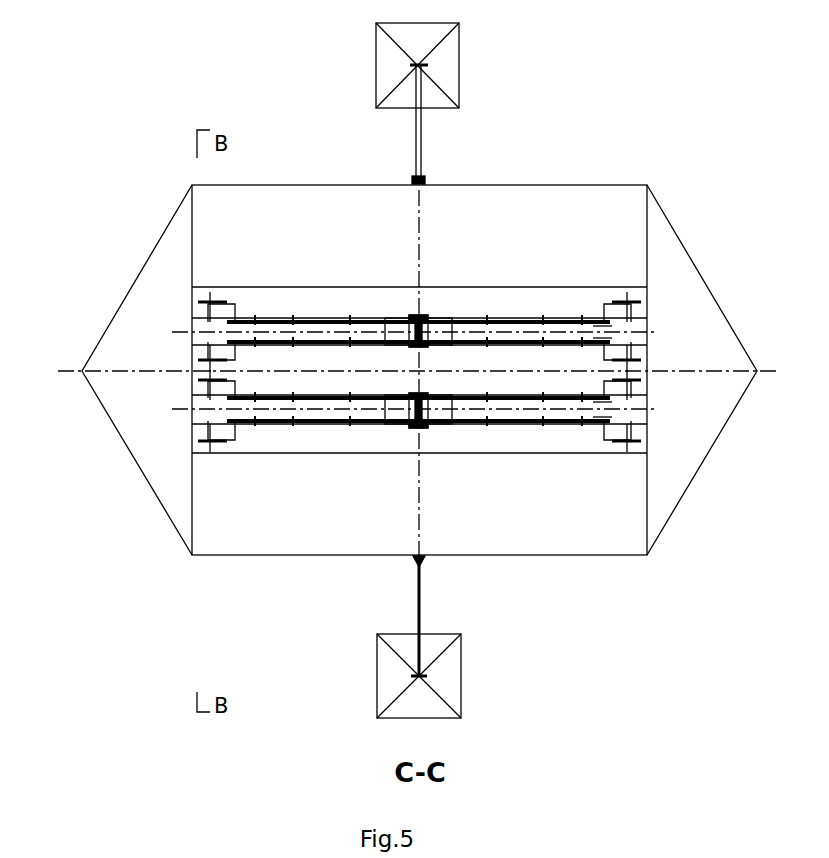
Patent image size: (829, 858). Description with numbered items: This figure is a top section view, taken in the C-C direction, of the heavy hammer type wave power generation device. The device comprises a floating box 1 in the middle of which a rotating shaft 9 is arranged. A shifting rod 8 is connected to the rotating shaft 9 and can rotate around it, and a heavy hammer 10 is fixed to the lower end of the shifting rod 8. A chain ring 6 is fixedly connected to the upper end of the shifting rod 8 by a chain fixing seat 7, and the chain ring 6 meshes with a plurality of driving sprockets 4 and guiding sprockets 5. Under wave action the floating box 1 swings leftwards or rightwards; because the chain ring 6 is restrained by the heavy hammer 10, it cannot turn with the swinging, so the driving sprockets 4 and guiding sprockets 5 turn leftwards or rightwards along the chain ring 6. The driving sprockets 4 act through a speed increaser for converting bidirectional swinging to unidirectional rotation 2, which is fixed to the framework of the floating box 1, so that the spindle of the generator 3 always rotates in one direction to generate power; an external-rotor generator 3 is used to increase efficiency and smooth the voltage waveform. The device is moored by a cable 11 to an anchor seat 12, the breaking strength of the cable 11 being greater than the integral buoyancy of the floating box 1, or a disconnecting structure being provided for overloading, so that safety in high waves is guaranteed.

The floating box 1 is at (150, 347).
The speed increaser for converting bidirectional swinging to unidirectional rotation 2 is at (212, 300).
The generator 3 is at (221, 302).
The driving sprockets 4 is at (232, 320).
The guiding sprockets 5 is at (291, 320).
The chain ring 6 is at (337, 320).
The chain fixing seat 7 is at (421, 318).
The shifting rod 8 is at (428, 318).
The rotating shaft 9 is at (439, 318).
The heavy hammer 10 is at (445, 413).
The cable 11 is at (419, 582).
The anchor seat 12 is at (422, 700).